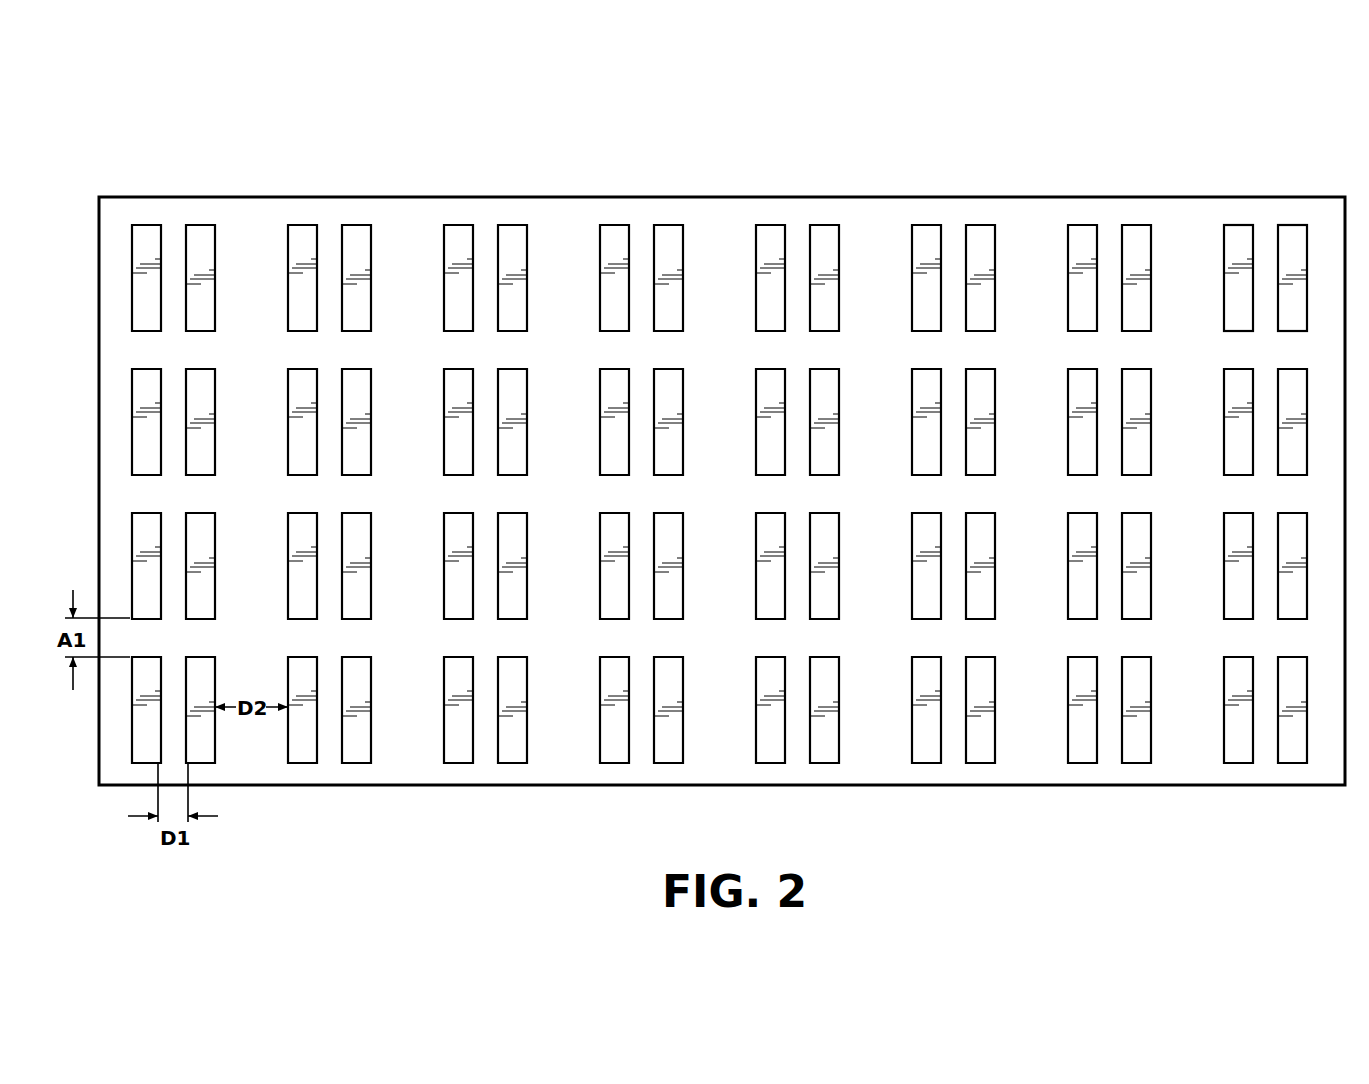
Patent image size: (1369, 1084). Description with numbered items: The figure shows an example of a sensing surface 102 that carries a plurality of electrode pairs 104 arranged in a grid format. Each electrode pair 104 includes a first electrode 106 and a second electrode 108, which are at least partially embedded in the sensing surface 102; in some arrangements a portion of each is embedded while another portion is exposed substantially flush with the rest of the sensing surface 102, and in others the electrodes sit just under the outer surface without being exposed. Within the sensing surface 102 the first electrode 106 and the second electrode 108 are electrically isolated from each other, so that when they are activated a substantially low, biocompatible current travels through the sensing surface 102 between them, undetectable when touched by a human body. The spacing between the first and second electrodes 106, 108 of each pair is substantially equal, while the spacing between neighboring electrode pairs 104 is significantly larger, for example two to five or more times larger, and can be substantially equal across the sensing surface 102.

The sensing surface 102 is at (876, 197).
The electrode pair 104 is at (508, 211).
The first electrode 106 is at (1240, 240).
The second electrode 108 is at (1292, 240).